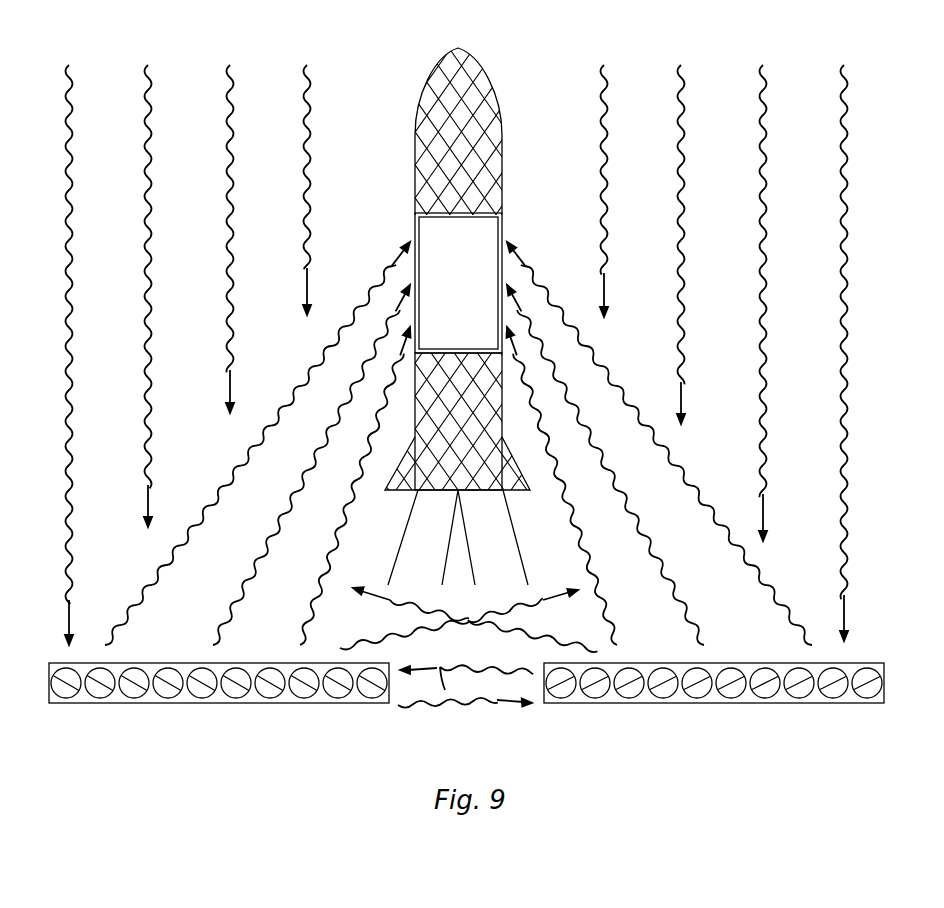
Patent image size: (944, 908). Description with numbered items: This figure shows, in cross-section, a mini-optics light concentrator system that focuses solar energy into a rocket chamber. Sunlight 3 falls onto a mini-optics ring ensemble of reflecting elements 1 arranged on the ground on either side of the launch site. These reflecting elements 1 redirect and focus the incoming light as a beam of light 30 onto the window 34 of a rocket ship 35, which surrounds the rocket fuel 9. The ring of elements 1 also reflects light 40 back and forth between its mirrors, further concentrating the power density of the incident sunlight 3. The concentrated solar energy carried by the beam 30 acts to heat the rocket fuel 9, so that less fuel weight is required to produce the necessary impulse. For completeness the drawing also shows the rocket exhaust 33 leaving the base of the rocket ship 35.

The reflecting elements 1 is at (62, 731).
The sunlight 3 is at (147, 183).
The rocket fuel 9 is at (472, 251).
The beam of light 30 is at (320, 556).
The rocket exhaust 33 is at (402, 548).
The window 34 is at (503, 228).
The rocket ship 35 is at (475, 67).
The light 40 is at (503, 670).